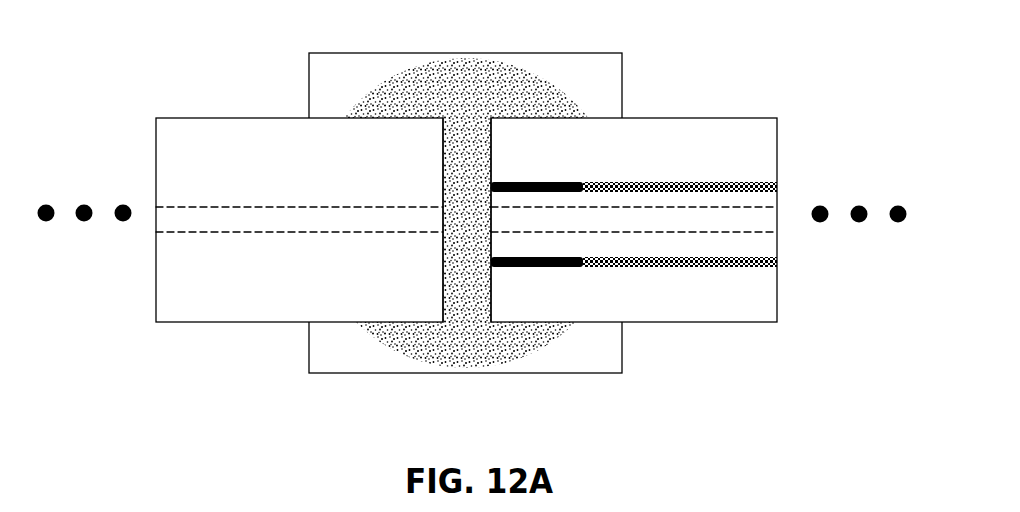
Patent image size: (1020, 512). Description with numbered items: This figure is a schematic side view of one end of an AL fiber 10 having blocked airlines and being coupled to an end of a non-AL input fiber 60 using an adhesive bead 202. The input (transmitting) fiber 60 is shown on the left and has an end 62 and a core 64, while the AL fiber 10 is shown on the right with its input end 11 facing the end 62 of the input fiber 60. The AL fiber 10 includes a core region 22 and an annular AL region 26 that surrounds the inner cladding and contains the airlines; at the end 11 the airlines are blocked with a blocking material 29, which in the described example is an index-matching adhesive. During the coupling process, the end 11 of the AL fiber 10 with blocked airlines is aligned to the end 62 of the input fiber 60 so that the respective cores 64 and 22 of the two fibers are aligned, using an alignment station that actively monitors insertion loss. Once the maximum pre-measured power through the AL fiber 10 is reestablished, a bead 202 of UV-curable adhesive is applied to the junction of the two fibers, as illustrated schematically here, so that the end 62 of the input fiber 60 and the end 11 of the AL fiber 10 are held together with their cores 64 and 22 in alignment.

The bead 202 is at (505, 72).
The input fiber 60 is at (247, 118).
The core 64 is at (185, 207).
The end 62 is at (443, 147).
The AL fiber 10 is at (652, 323).
The core region 22 is at (697, 207).
The annular AL region 26 is at (657, 257).
The blocking material 29 is at (535, 180).
The end 11 is at (490, 303).